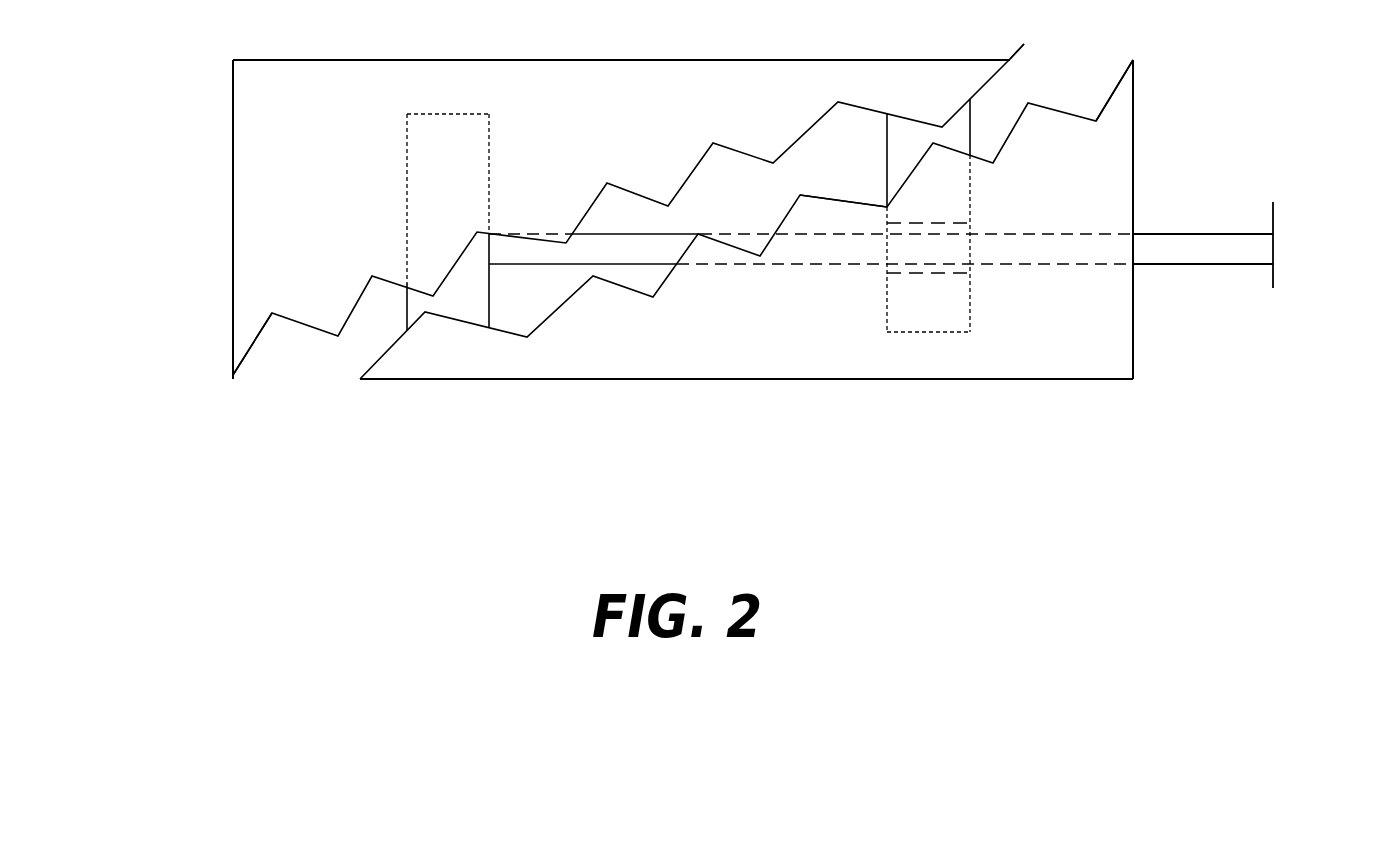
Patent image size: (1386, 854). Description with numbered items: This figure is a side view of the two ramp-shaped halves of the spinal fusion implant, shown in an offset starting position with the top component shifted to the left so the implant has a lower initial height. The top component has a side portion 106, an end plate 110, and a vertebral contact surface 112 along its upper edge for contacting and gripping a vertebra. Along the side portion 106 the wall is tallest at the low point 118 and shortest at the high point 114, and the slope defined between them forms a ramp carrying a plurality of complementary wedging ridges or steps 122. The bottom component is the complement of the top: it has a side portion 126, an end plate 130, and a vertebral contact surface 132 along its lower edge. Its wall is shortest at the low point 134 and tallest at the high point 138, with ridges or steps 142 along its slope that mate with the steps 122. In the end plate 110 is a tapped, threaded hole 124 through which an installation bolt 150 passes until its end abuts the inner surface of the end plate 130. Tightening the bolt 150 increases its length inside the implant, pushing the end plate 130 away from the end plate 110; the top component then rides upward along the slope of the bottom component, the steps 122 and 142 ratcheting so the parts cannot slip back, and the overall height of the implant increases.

The side portion 106 is at (312, 135).
The end plate 110 is at (957, 317).
The vertebral contact surface 112 is at (535, 60).
The high point 114 is at (1024, 44).
The low point 118 is at (233, 378).
The ridges or steps 122 is at (702, 160).
The threaded hole 124 is at (938, 221).
The side portion 126 is at (1075, 337).
The end plate 130 is at (472, 177).
The vertebral contact surface 132 is at (803, 380).
The low point 134 is at (360, 379).
The high point 138 is at (1133, 60).
The ridges or steps 142 is at (817, 197).
The installation bolt 150 is at (1275, 250).